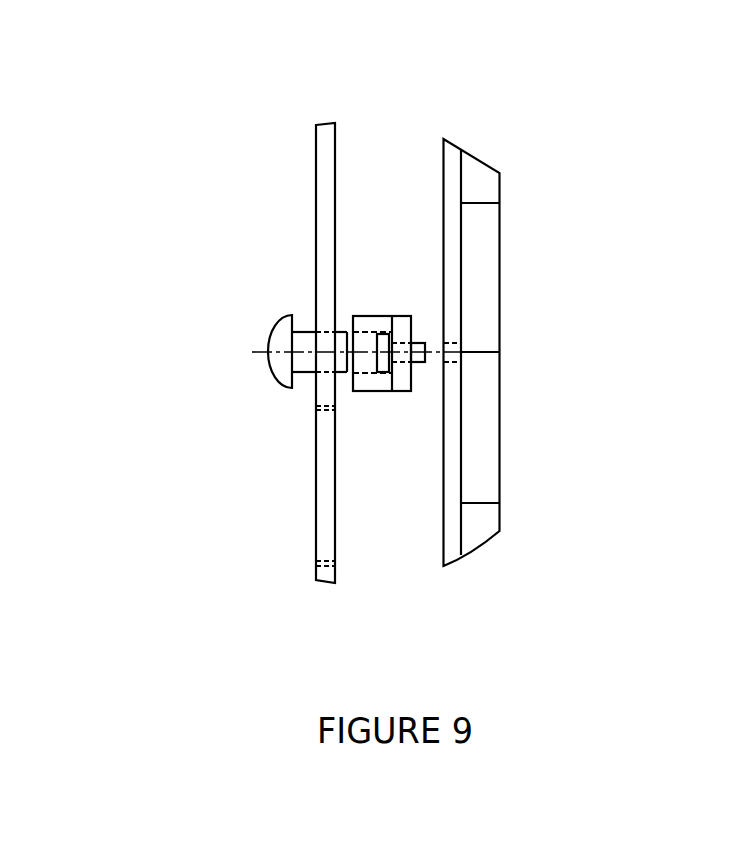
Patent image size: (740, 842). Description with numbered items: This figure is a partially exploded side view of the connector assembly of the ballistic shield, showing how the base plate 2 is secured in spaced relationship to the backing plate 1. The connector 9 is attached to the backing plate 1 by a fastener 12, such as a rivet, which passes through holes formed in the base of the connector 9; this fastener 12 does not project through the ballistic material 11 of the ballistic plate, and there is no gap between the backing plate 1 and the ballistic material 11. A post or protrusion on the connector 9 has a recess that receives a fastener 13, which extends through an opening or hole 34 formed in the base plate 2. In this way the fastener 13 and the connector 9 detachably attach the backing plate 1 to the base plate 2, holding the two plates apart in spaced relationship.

The backing plate 1 is at (460, 296).
The base plate 2 is at (260, 341).
The connector 9 is at (272, 427).
The ballistic material 11 is at (553, 352).
The fastener 12 is at (421, 493).
The fastener 13 is at (271, 332).
The opening or hole 34 is at (241, 418).